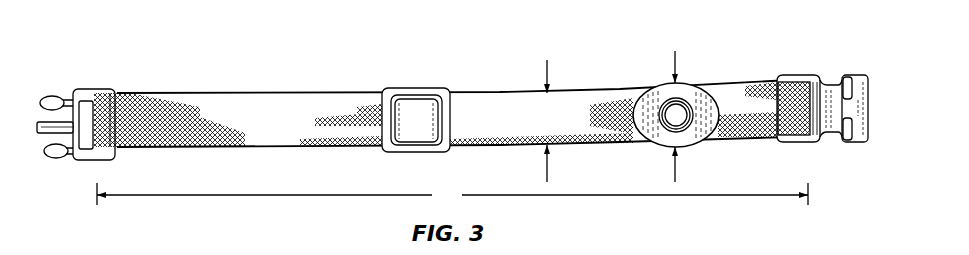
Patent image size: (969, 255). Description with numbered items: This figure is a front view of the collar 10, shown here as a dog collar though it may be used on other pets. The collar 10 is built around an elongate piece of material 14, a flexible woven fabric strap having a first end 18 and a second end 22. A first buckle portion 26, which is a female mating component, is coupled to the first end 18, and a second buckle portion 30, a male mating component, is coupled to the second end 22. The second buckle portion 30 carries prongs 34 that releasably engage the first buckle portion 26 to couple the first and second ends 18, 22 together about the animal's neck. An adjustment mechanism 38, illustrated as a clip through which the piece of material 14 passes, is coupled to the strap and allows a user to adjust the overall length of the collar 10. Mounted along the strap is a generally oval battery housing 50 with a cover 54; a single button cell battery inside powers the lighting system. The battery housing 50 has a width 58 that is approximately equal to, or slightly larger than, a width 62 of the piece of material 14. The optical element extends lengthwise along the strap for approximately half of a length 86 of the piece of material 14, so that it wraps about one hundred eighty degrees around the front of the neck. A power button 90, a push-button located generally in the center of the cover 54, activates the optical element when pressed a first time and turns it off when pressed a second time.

The collar 10 is at (452, 112).
The elongate piece of material 14 is at (262, 147).
The first end 18 is at (773, 137).
The second end 22 is at (124, 153).
The first buckle portion 26 is at (856, 75).
The second buckle portion 30 is at (77, 104).
The prongs 34 is at (53, 98).
The adjustment mechanism 38 is at (427, 88).
The battery housing 50 is at (678, 109).
The cover 54 is at (703, 106).
The width of the battery housing 58 is at (674, 108).
The width of the piece of material 62 is at (546, 113).
The length of the piece of material 86 is at (452, 194).
The power button 90 is at (674, 118).